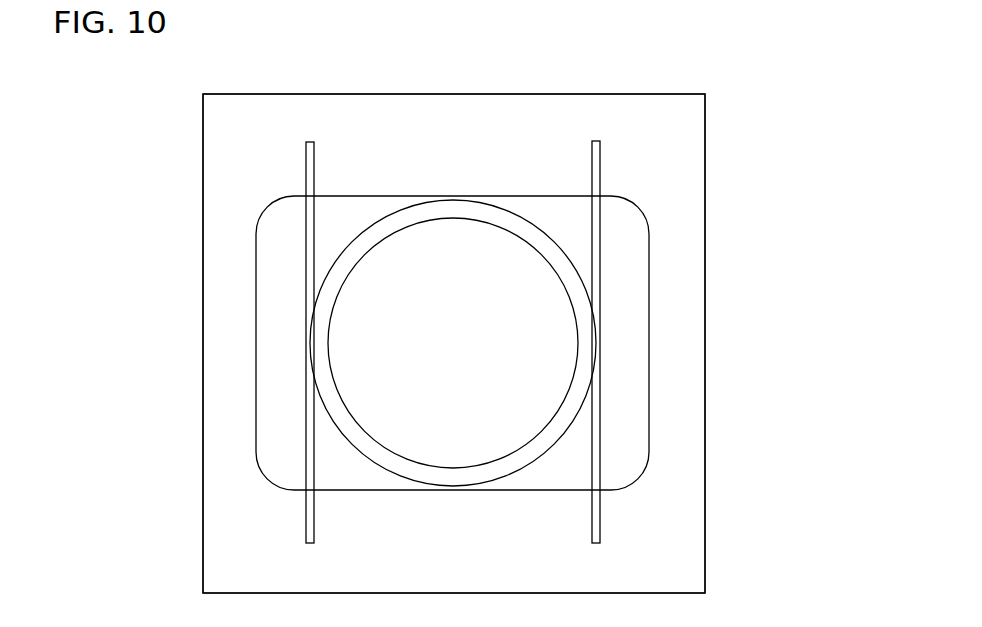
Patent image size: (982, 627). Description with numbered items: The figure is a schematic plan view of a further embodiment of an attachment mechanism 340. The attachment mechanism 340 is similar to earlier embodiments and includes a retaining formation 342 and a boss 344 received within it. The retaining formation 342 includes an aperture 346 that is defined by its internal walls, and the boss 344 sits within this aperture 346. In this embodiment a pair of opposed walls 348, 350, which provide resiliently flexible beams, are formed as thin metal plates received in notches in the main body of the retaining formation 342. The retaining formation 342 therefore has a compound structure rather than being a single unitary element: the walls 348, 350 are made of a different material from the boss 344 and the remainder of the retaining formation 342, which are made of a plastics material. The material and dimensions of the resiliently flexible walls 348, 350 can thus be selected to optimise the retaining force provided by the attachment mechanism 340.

The attachment mechanism 340 is at (727, 98).
The retaining formation 342 is at (707, 525).
The boss 344 is at (524, 217).
The aperture 346 is at (350, 208).
The opposed wall 348 is at (305, 250).
The opposed wall 350 is at (600, 220).